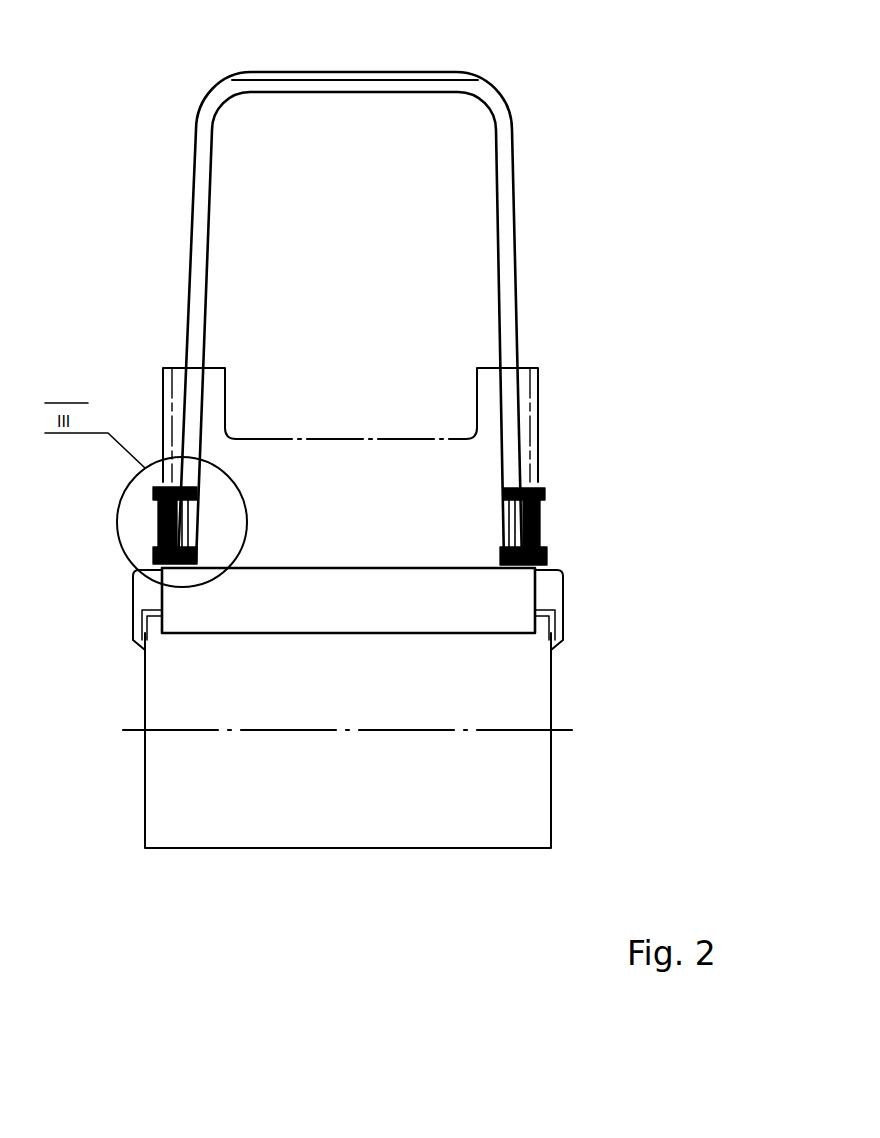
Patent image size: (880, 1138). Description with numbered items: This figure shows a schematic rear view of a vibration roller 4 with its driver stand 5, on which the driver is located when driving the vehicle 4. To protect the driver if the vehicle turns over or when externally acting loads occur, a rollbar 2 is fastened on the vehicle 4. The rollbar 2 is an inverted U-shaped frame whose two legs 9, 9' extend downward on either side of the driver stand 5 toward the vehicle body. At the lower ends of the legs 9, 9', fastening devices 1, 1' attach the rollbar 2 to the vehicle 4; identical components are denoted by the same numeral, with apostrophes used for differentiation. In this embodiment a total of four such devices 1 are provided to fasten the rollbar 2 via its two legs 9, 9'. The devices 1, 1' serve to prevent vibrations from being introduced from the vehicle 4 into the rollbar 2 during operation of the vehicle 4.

The device for fastening a rollbar 1 is at (558, 472).
The device for fastening a rollbar 1' is at (567, 517).
The rollbar 2 is at (578, 120).
The vibration roller 4 is at (403, 284).
The driver stand 5 is at (362, 372).
The leg 9 is at (522, 375).
The leg 9' is at (173, 362).